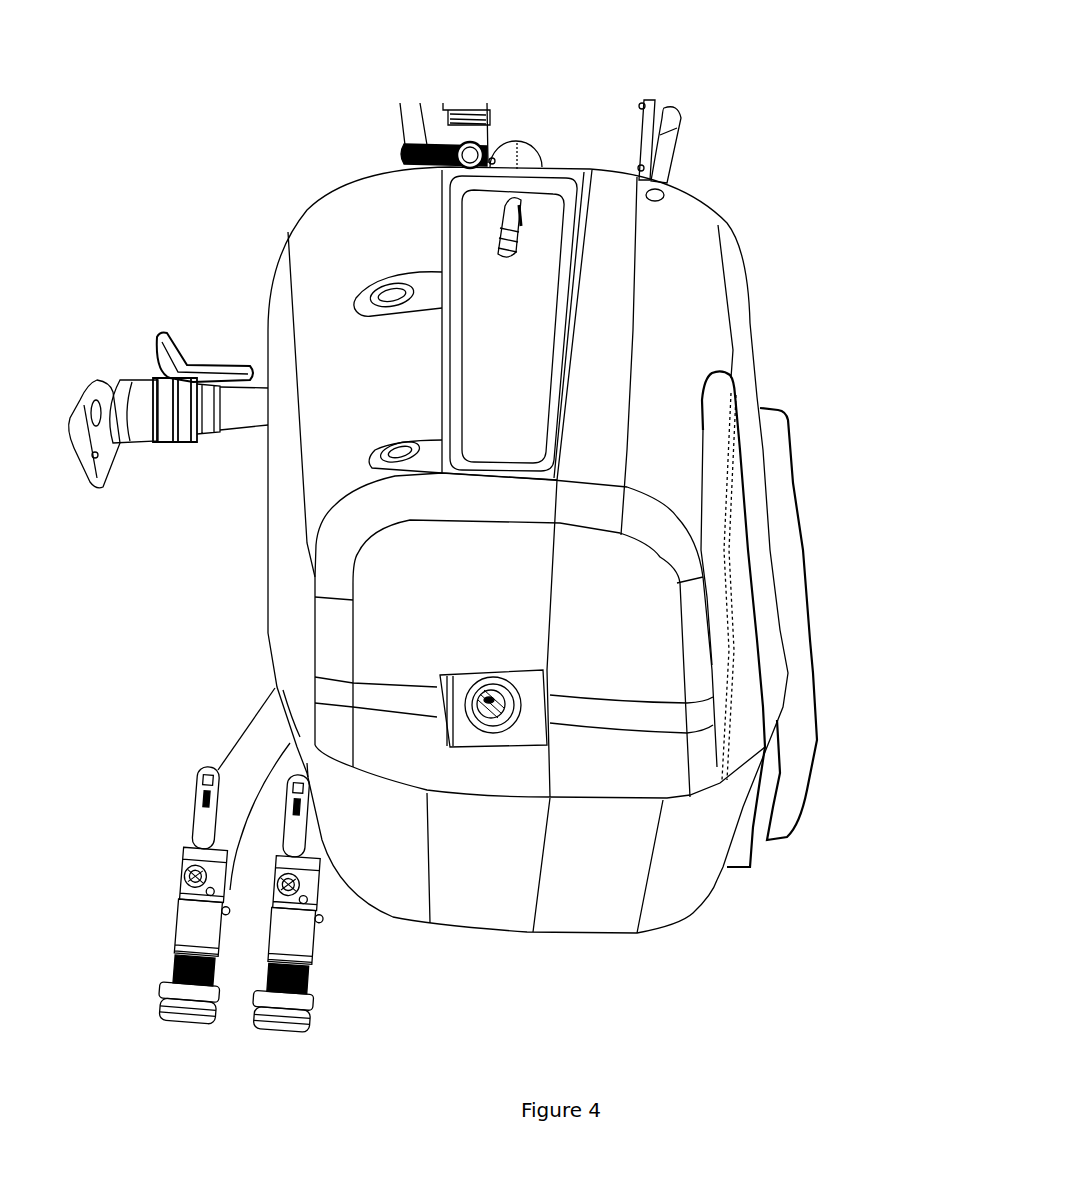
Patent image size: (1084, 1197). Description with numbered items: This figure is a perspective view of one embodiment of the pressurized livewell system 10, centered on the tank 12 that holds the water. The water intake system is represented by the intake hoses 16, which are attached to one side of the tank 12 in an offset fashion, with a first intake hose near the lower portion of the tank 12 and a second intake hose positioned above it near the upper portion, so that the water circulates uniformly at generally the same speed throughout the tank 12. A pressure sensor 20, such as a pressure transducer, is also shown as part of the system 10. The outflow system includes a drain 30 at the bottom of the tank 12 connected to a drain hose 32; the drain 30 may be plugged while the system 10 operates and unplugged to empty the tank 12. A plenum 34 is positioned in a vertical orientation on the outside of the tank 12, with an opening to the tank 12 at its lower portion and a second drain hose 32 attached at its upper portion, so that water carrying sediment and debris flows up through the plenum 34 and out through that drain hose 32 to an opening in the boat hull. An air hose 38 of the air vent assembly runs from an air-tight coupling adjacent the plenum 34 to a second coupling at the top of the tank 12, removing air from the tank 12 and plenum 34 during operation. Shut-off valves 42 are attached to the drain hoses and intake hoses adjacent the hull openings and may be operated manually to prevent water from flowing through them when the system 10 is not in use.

The pressurized livewell system 10 is at (496, 594).
The tank 12 is at (550, 550).
The intake hoses 16 is at (189, 351).
The pressure sensor 20 is at (697, 150).
The drain 30 is at (540, 635).
The drain hose 32 is at (274, 832).
The plenum 34 is at (545, 143).
The air hose 38 is at (394, 135).
The shut-off valves 42 is at (198, 701).